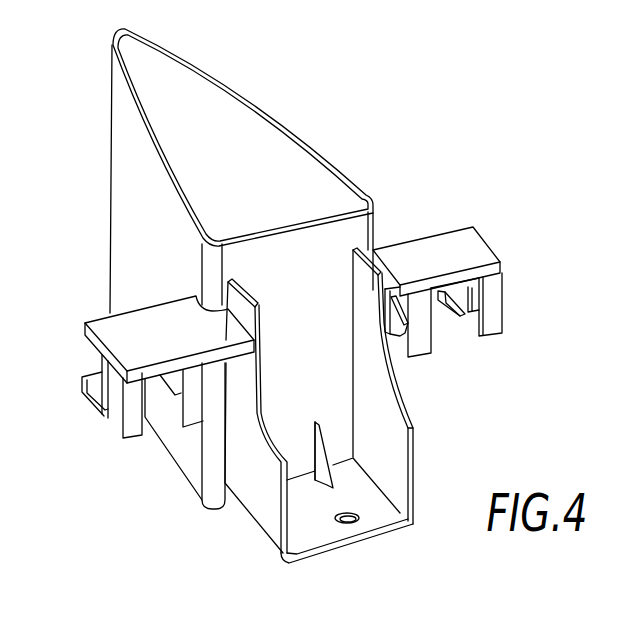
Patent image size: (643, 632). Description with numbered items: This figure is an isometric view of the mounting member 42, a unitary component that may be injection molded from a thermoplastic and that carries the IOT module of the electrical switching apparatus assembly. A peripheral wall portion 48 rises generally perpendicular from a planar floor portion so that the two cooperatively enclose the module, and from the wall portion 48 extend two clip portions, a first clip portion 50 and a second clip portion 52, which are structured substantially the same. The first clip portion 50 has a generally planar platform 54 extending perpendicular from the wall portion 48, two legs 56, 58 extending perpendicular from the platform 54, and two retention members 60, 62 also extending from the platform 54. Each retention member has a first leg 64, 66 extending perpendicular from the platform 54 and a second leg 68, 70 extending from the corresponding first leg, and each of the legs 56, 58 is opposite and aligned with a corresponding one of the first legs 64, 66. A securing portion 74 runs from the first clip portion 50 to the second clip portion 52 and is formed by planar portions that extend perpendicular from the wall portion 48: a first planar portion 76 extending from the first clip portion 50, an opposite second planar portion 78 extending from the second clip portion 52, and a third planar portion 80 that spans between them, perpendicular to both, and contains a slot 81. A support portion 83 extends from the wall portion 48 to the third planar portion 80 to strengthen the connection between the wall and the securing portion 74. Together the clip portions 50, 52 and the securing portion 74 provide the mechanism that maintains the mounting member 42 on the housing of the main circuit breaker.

The mounting member 42 is at (412, 110).
The peripheral wall portion 48 is at (122, 168).
The first clip portion 50 is at (540, 326).
The second clip portion 52 is at (94, 460).
The platform 54 is at (477, 236).
The leg 56 is at (490, 311).
The leg 58 is at (421, 338).
The retention member 60 is at (458, 338).
The retention member 62 is at (402, 297).
The first leg 64 is at (482, 287).
The first leg 66 is at (405, 317).
The second leg 68 is at (450, 292).
The second leg 70 is at (385, 316).
The securing portion 74 is at (393, 558).
The first planar portion 76 is at (392, 447).
The second planar portion 78 is at (267, 496).
The third planar portion 80 is at (297, 542).
The slot 81 is at (358, 527).
The support portion 83 is at (321, 421).